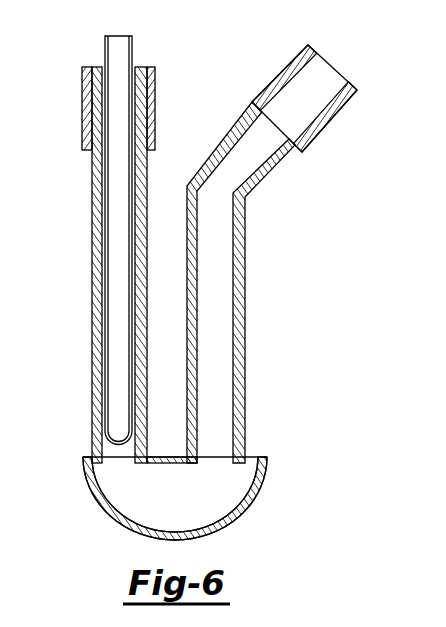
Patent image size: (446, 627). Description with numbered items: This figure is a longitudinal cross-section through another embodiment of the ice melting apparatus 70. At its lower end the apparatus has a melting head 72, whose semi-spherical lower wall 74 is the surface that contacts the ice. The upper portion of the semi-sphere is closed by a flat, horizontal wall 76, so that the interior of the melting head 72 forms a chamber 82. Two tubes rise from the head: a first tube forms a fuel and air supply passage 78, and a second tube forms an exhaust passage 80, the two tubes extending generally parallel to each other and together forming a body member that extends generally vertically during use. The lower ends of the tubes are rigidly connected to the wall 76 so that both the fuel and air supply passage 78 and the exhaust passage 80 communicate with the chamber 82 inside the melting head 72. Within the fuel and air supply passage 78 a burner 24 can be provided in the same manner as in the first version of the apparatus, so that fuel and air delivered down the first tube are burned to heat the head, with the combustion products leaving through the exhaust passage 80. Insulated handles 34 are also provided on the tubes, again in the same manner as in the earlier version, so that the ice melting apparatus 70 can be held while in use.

The burner 24 is at (131, 53).
The insulated handles 34 is at (89, 120).
The ice melting apparatus 70 is at (205, 293).
The melting head 72 is at (181, 512).
The semi-spherical lower wall 74 is at (213, 540).
The flat, horizontal wall 76 is at (177, 461).
The fuel and air supply passage 78 is at (95, 265).
The exhaust passage 80 is at (222, 321).
The chamber 82 is at (128, 501).